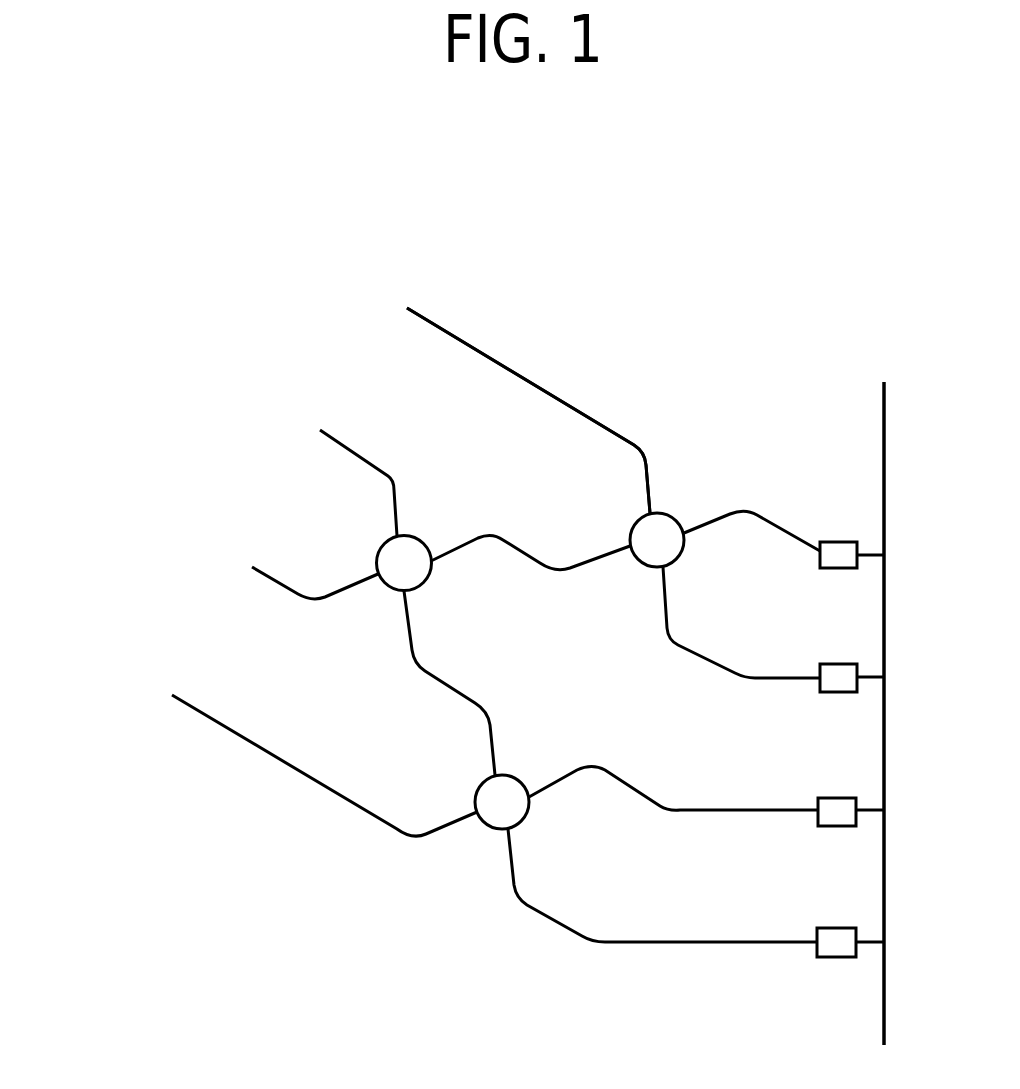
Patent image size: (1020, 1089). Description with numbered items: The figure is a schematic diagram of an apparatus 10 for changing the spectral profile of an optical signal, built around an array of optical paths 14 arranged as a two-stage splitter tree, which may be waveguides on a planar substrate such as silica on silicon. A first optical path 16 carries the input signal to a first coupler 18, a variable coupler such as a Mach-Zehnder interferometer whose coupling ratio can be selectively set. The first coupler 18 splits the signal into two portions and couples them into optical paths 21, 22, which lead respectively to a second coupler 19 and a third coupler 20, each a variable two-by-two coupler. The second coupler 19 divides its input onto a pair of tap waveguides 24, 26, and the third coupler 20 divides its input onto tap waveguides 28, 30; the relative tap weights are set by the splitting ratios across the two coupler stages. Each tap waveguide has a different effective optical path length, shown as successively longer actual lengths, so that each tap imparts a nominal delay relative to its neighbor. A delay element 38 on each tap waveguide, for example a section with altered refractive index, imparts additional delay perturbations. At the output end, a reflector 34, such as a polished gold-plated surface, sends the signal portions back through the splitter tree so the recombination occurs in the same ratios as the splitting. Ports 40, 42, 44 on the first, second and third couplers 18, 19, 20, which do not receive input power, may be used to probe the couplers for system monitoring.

The apparatus for changing the spectral profile of an optical system 10 is at (230, 883).
The array of optical paths 14 is at (617, 388).
The first optical path 16 is at (302, 614).
The first coupler 18 is at (418, 538).
The second coupler 19 is at (488, 827).
The third coupler 20 is at (643, 567).
The optical path 21 is at (413, 630).
The optical path 22 is at (518, 552).
The tap waveguide 24 is at (653, 941).
The tap waveguide 26 is at (685, 810).
The tap waveguide 28 is at (768, 676).
The tap waveguide 30 is at (773, 533).
The reflector 34 is at (883, 433).
The delay element 38 is at (818, 563).
The port 40 is at (338, 443).
The port 42 is at (260, 752).
The port 44 is at (467, 343).